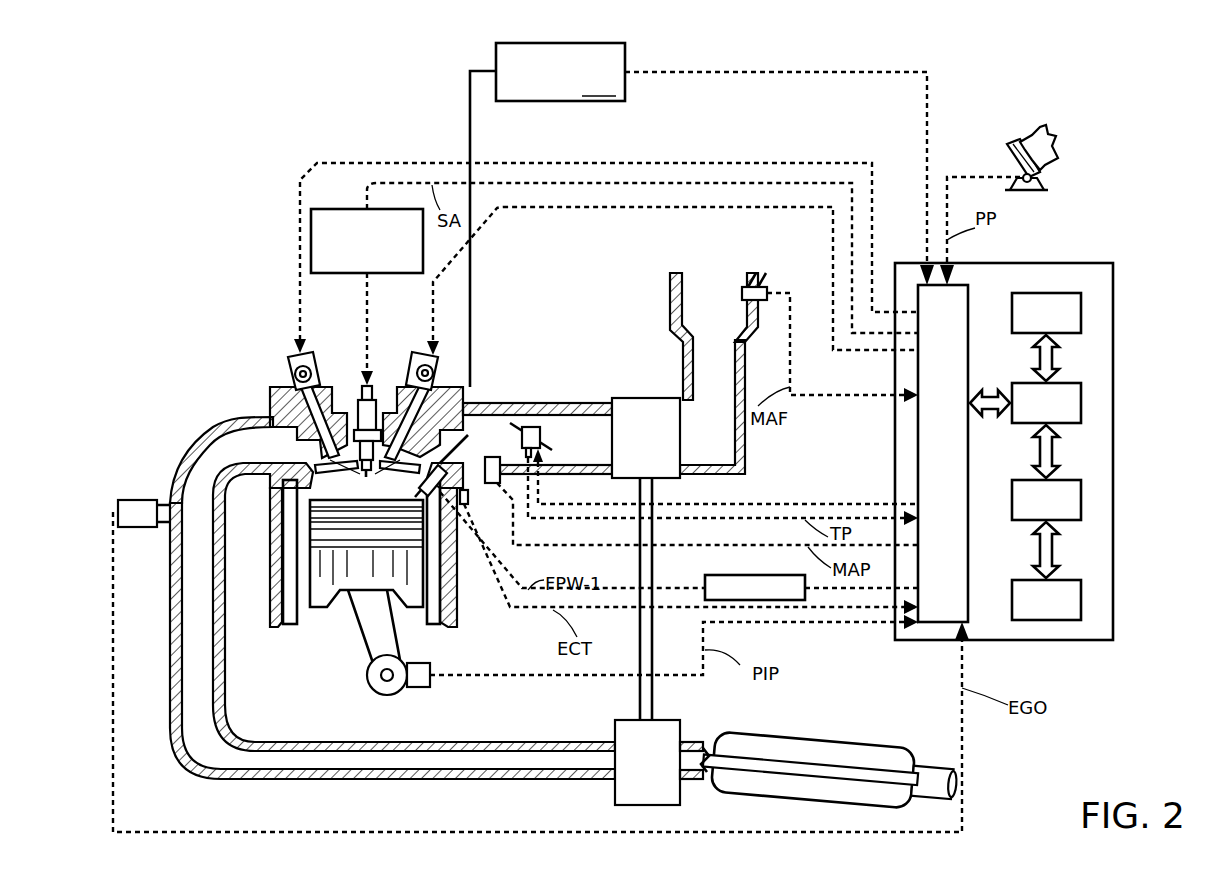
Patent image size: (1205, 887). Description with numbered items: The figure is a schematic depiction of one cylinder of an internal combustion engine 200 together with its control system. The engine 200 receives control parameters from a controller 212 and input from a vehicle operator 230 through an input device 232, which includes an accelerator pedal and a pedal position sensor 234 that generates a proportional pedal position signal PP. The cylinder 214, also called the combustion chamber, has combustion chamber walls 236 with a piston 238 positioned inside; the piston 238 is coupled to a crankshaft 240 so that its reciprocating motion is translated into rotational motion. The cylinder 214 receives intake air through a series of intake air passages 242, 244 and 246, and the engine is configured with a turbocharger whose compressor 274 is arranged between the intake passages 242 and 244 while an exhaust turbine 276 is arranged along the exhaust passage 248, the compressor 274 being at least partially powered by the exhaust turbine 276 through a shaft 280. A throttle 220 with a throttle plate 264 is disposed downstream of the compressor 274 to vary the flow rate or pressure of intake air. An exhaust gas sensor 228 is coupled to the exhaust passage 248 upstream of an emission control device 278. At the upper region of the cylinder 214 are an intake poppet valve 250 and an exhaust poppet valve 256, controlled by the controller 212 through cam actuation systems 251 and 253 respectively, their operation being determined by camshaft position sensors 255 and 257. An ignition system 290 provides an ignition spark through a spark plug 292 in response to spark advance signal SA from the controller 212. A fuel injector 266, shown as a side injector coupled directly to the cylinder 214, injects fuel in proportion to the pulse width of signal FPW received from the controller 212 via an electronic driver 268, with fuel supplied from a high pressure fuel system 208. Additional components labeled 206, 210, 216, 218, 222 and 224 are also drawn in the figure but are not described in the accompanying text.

The engine 200 is at (188, 190).
The CPU / microprocessor unit 206 is at (1082, 400).
The high pressure fuel system 208 is at (968, 290).
The ROM read-only memory 210 is at (1082, 310).
The controller 212 is at (1103, 263).
The cylinder 214 is at (273, 505).
The engine coolant temperature sensor 216 is at (462, 510).
The cylinder wall / cooling sleeve 218 is at (458, 560).
The throttle 220 is at (531, 426).
The mass air flow sensor 222 is at (767, 280).
The manifold absolute pressure sensor 224 is at (498, 498).
The exhaust gas sensor 228 is at (118, 510).
The vehicle operator 230 is at (1052, 142).
The input device 232 is at (1005, 150).
The pedal position sensor 234 is at (1040, 178).
The combustion chamber walls 236 is at (300, 630).
The piston 238 is at (350, 578).
The crankshaft 240 is at (372, 697).
The intake air passage 242 is at (732, 316).
The intake air passage 244 is at (605, 446).
The intake air passage 246 is at (508, 446).
The exhaust passage 248 is at (261, 455).
The intake poppet valve 250 is at (374, 415).
The cam actuation system 251 is at (415, 356).
The cam actuation system 253 is at (313, 356).
The camshaft position sensor 255 is at (455, 362).
The exhaust poppet valve 256 is at (270, 418).
The camshaft position sensor 257 is at (287, 372).
The throttle plate 264 is at (515, 428).
The fuel injector 266 is at (436, 469).
The electronic driver 268 is at (708, 575).
The compressor 274 is at (633, 397).
The exhaust turbine 276 is at (615, 800).
The emission control device 278 is at (880, 743).
The shaft 280 is at (648, 683).
The ignition system 290 is at (330, 209).
The spark plug 292 is at (360, 420).